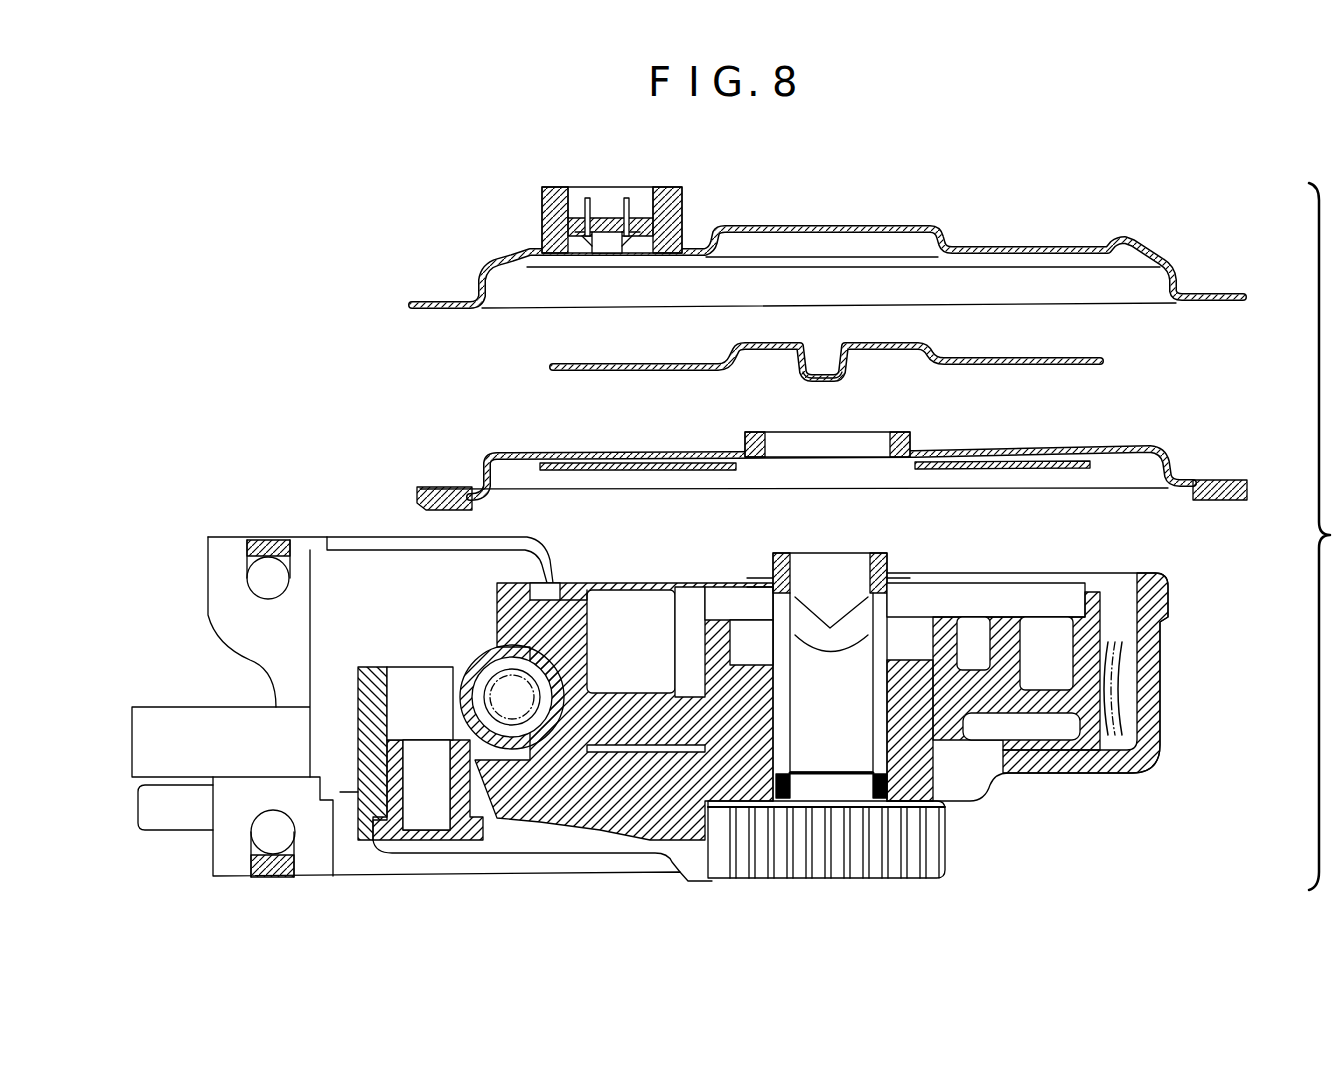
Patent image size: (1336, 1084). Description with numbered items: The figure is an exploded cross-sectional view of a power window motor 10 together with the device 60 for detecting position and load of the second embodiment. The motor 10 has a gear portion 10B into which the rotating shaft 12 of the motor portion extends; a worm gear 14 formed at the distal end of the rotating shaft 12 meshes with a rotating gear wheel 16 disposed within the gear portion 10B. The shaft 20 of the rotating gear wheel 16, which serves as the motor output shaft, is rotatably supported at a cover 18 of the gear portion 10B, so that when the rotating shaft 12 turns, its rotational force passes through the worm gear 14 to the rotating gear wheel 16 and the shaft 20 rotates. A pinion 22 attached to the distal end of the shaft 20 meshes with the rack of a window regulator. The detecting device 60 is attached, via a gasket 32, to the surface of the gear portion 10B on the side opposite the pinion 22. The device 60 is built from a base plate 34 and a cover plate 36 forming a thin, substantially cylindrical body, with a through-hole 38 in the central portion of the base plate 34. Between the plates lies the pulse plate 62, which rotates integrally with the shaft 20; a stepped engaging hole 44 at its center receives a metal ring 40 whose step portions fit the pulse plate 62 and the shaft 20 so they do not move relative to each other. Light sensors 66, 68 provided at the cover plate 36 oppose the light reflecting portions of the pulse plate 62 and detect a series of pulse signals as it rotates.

The motor 10 is at (190, 588).
The gear portion 10B is at (1172, 690).
The rotating shaft 12 is at (492, 790).
The worm gear 14 is at (515, 720).
The rotating gear wheel 16 is at (605, 760).
The cover 18 is at (1065, 775).
The shaft 20 is at (826, 740).
The pinion 22 is at (880, 872).
The gasket 32 is at (1152, 480).
The base plate 34 is at (508, 452).
The cover plate 36 is at (510, 262).
The through-hole 38 is at (895, 432).
The metal ring 40 is at (792, 470).
The engaging hole 44 is at (800, 380).
The device for detecting position and load 60 is at (404, 375).
The pulse plate 62 is at (552, 366).
The light sensor 66 is at (605, 254).
The light sensor 68 is at (590, 325).